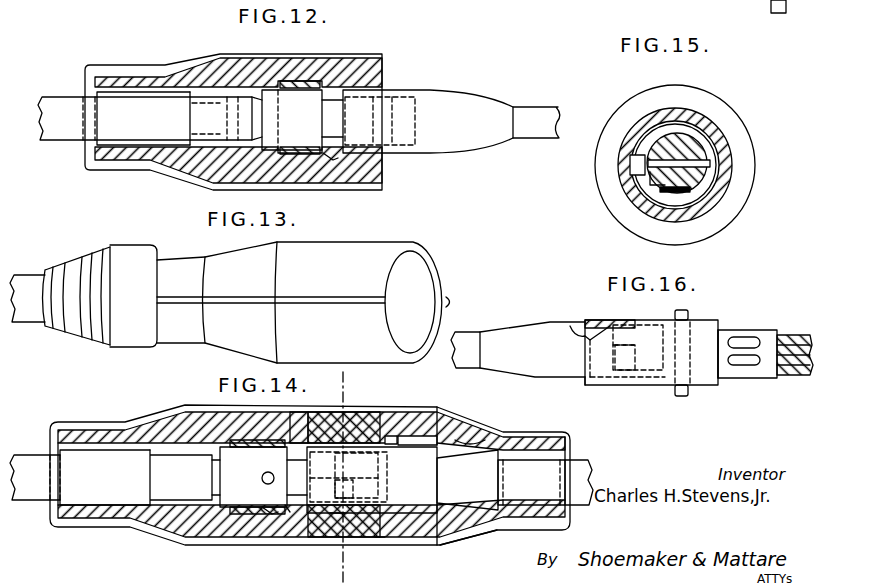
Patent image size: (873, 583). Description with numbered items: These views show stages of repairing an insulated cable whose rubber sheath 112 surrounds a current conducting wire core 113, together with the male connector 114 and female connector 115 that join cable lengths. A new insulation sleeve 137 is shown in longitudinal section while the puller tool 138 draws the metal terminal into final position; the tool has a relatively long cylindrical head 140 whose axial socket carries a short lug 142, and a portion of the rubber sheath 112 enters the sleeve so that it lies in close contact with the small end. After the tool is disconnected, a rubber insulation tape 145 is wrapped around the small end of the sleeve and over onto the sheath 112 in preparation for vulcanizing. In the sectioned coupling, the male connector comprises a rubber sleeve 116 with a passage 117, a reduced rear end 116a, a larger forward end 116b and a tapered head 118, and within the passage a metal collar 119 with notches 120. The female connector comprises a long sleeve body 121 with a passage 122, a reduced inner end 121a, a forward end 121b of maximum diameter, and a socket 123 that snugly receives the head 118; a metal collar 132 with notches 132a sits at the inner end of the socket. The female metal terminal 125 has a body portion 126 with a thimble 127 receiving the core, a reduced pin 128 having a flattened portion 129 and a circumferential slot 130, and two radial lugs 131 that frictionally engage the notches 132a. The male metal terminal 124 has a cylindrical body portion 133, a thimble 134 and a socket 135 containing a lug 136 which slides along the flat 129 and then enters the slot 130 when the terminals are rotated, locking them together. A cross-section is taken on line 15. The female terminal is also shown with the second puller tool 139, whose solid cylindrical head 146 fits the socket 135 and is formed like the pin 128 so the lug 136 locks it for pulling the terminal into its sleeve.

In FIG. 12, the rubber sheath 112 is at (65, 103).
In FIG. 13, the rubber sheath 112 is at (30, 282).
In FIG. 14, the rubber sheath 112 is at (27, 460).
In FIG. 16, the current conducting wire core 113 is at (797, 376).
In FIG. 14, the current conducting wire core 113 is at (588, 467).
In FIG. 14, the male connector 114 is at (481, 538).
In FIG. 15, the female connector 115 is at (733, 100).
In FIG. 14, the female connector 115 is at (77, 420).
In FIG. 14, the rubber sleeve 116 is at (418, 413).
In FIG. 14, the reduced rear end of sleeve 116a is at (572, 432).
In FIG. 14, the larger forward end of sleeve 116b is at (385, 525).
In FIG. 14, the passage 117 is at (462, 442).
In FIG. 15, the head 118 is at (732, 170).
In FIG. 14, the head 118 is at (342, 515).
In FIG. 14, the metal collar 119 is at (390, 436).
In FIG. 14, the notches or slots 120 is at (425, 440).
In FIG. 14, the long sleeve body 121 is at (173, 427).
In FIG. 14, the reduced inner end of sleeve body 121a is at (67, 513).
In FIG. 14, the forward end of sleeve body 121b is at (283, 512).
In FIG. 14, the passage 122 is at (165, 507).
In FIG. 14, the socket 123 is at (322, 437).
In FIG. 15, the metal terminal 124 is at (725, 186).
In FIG. 16, the metal terminal 124 is at (707, 375).
In FIG. 14, the metal terminal 124 is at (415, 498).
In FIG. 15, the metal terminal 125 is at (700, 150).
In FIG. 12, the body portion 126 is at (300, 100).
In FIG. 14, the body portion 126 is at (263, 477).
In FIG. 12, the thimble 127 is at (212, 100).
In FIG. 14, the thimble 127 is at (185, 477).
In FIG. 16, the reduced pin 128 is at (648, 343).
In FIG. 15, the flattened portion 129 is at (660, 195).
In FIG. 15, the circumferential slot 130 is at (648, 183).
In FIG. 12, the radially directed lugs 131 is at (300, 81).
In FIG. 14, the radially directed lugs 131 is at (264, 472).
In FIG. 12, the metal collar 132 is at (327, 157).
In FIG. 14, the metal collar 132 is at (267, 514).
In FIG. 14, the slots or notches 132a is at (250, 437).
In FIG. 16, the cylindrical body portion 133 is at (703, 327).
In FIG. 16, the thimble 134 is at (762, 337).
In FIG. 14, the thimble 134 is at (490, 492).
In FIG. 16, the socket 135 is at (573, 329).
In FIG. 15, the lug 136 is at (628, 168).
In FIG. 16, the lug 136 is at (642, 368).
In FIG. 14, the lug 136 is at (385, 471).
In FIG. 12, the new insulation sleeve 137 is at (384, 53).
In FIG. 13, the new insulation sleeve 137 is at (384, 240).
In FIG. 12, the puller tool 138 is at (464, 90).
In FIG. 16, the puller tool 139 is at (523, 331).
In FIG. 12, the cylindrical head 140 is at (480, 142).
In FIG. 12, the lug 142 is at (392, 113).
In FIG. 13, the rubber insulation tape 145 is at (123, 267).
In FIG. 16, the solid cylindrical head 146 is at (562, 365).
In FIG. 14, the section line 15 is at (330, 386).